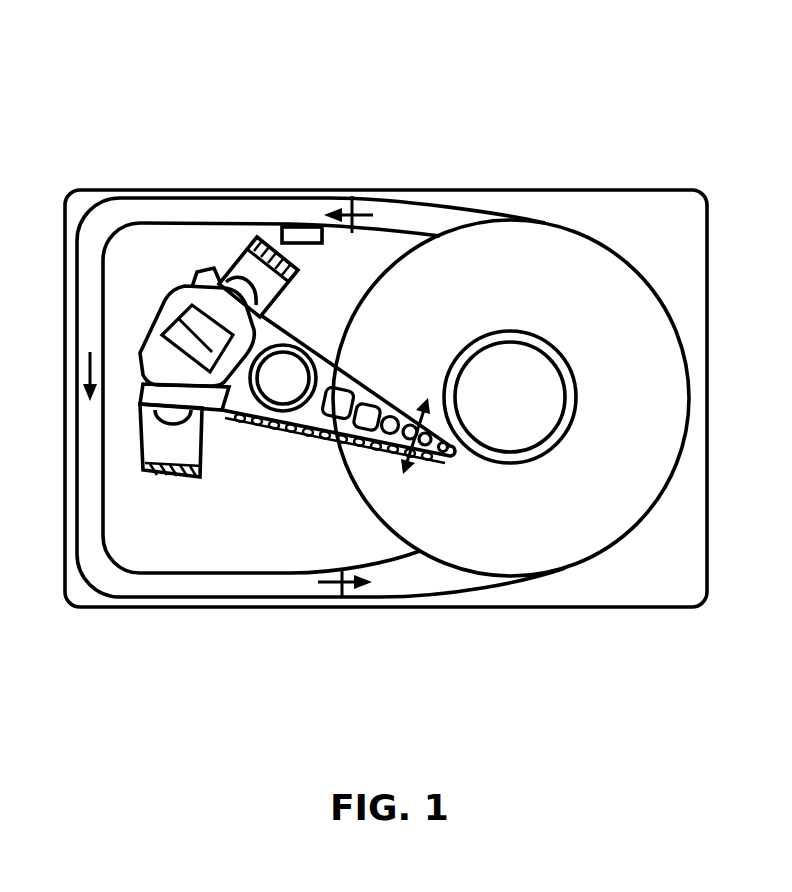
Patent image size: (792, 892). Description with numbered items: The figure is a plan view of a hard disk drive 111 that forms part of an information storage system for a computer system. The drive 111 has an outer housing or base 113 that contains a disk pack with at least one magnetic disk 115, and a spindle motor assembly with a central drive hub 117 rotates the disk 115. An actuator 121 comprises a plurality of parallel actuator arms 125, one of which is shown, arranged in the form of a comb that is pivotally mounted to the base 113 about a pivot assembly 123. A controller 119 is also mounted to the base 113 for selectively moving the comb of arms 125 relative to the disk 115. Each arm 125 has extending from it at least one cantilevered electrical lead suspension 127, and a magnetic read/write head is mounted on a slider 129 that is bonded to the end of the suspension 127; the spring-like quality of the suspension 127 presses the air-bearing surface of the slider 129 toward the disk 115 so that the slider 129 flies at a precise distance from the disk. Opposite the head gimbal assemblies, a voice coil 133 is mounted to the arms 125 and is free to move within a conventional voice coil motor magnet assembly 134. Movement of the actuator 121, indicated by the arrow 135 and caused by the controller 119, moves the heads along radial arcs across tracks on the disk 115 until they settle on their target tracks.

The hard disk drive 111 is at (770, 50).
The base 113 is at (574, 190).
The magnetic disk 115 is at (583, 258).
The central drive hub 117 is at (538, 336).
The controller 119 is at (313, 243).
The actuator 121 is at (214, 496).
The pivot assembly 123 is at (272, 412).
The actuator arm 125 is at (333, 360).
The electrical lead suspension 127 is at (373, 392).
The slider 129 is at (450, 458).
The voice coil 133 is at (167, 297).
The voice coil motor magnet assembly 134 is at (247, 263).
The arrow 135 is at (403, 458).